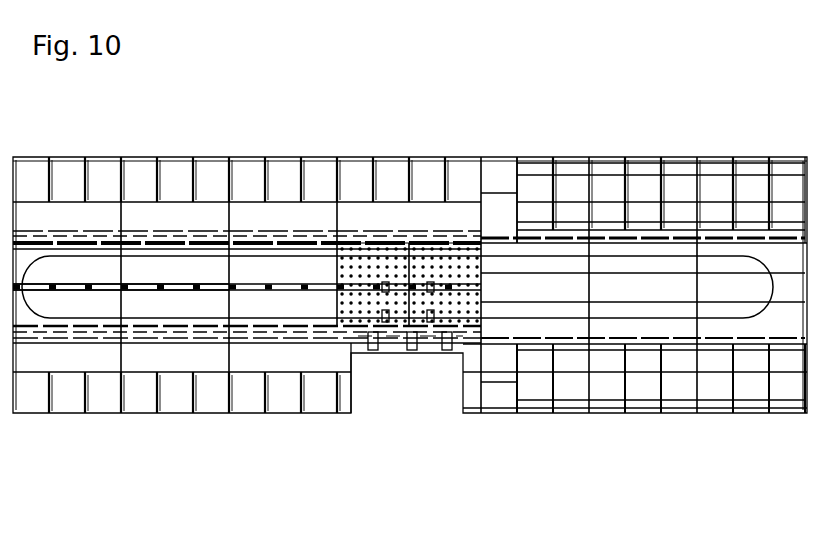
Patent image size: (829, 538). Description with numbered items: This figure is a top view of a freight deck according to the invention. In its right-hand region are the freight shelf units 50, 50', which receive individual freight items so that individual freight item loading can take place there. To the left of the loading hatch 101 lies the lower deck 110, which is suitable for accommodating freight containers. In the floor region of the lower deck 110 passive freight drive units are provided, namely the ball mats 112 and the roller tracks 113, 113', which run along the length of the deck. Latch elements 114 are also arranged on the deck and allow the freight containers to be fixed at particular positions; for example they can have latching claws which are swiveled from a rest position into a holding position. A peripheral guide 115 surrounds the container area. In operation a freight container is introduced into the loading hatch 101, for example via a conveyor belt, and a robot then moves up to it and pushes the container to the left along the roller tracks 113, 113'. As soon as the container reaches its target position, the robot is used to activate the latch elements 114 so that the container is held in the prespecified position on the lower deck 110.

The loading hatch 101 is at (428, 410).
The lower deck 110 is at (295, 313).
The ball mats 112 is at (405, 350).
The roller track 113 is at (247, 375).
The roller track 113' is at (121, 382).
The latch elements 114 is at (333, 333).
The peripheral guide 115 is at (742, 322).
The freight shelf unit 50 is at (635, 432).
The freight shelf unit 50' is at (661, 330).